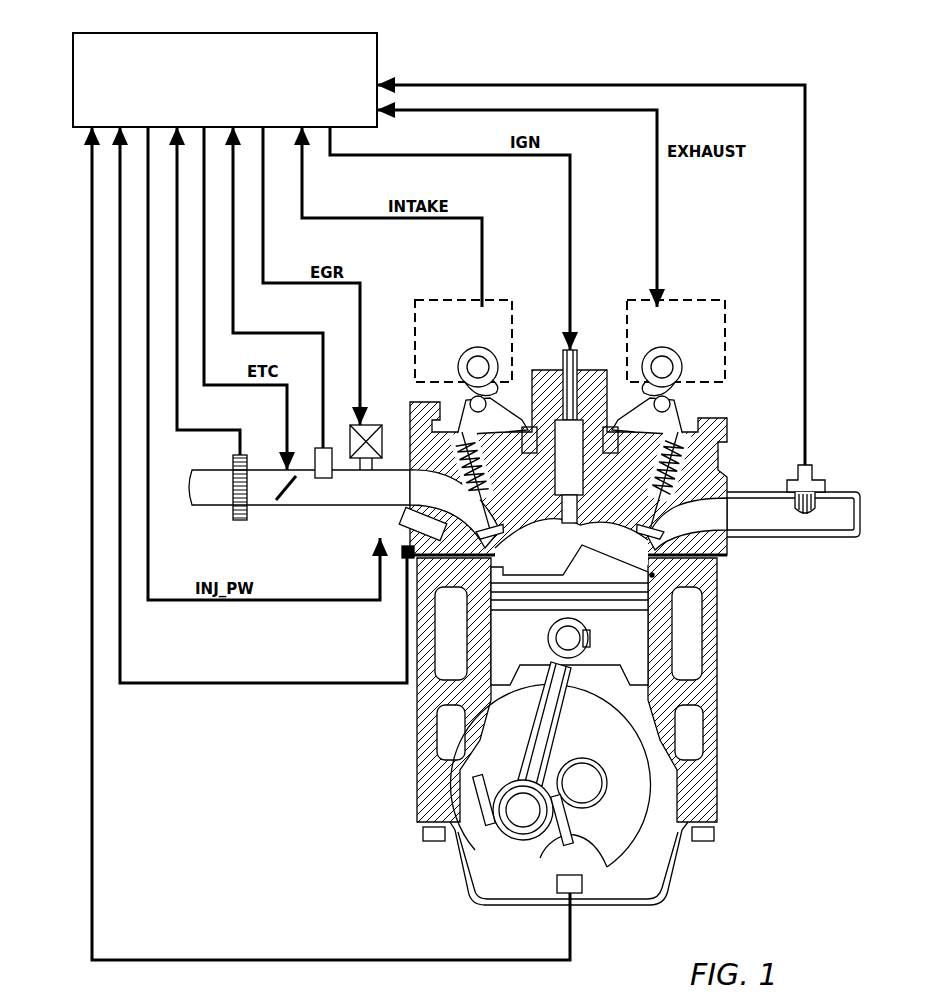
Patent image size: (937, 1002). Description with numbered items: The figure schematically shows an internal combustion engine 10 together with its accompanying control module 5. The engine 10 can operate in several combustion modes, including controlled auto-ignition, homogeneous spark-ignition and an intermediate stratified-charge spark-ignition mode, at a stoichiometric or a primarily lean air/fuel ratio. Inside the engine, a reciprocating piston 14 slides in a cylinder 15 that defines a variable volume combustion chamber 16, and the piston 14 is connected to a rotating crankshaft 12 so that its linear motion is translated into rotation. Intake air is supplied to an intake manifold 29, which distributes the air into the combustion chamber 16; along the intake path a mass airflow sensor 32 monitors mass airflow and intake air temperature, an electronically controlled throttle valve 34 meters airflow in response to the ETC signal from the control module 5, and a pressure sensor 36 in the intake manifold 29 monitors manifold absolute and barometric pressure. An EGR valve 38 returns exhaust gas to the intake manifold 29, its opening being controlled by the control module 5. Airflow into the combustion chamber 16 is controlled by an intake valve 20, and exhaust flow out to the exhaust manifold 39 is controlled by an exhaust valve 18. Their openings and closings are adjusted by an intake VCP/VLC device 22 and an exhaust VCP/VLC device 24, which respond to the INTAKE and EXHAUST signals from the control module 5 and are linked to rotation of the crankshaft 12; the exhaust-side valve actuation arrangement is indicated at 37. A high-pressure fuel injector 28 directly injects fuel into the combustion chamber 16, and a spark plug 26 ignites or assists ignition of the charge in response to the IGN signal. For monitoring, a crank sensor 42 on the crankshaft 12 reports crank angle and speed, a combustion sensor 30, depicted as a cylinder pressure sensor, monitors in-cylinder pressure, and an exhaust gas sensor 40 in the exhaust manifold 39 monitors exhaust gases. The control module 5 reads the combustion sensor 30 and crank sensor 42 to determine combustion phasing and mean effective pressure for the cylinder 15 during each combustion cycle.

The control module 5 is at (367, 58).
The internal combustion engine 10 is at (722, 692).
The crankshaft 12 is at (622, 840).
The piston 14 is at (604, 647).
The cylinder 15 is at (652, 575).
The combustion chamber 16 is at (522, 562).
The exhaust valve 18 is at (647, 522).
The intake valve 20 is at (495, 520).
The intake VCP/VLC device 22 is at (507, 300).
The exhaust VCP/VLC device 24 is at (710, 360).
The spark plug 26 is at (572, 350).
The fuel injector 28 is at (398, 514).
The intake manifold 29 is at (393, 468).
The combustion sensor 30 is at (405, 570).
The mass airflow sensor 32 is at (240, 521).
The throttle valve 34 is at (283, 500).
The pressure sensor 36 is at (323, 479).
The valve actuation system 37 is at (703, 265).
The EGR valve 38 is at (362, 459).
The exhaust manifold 39 is at (707, 510).
The exhaust gas sensor 40 is at (812, 477).
The crank sensor 42 is at (565, 890).